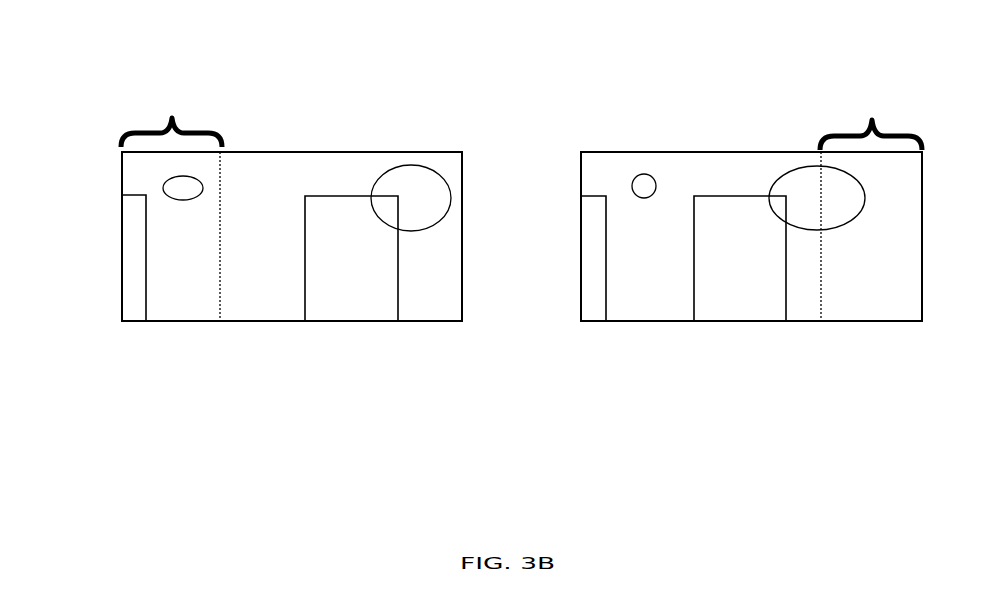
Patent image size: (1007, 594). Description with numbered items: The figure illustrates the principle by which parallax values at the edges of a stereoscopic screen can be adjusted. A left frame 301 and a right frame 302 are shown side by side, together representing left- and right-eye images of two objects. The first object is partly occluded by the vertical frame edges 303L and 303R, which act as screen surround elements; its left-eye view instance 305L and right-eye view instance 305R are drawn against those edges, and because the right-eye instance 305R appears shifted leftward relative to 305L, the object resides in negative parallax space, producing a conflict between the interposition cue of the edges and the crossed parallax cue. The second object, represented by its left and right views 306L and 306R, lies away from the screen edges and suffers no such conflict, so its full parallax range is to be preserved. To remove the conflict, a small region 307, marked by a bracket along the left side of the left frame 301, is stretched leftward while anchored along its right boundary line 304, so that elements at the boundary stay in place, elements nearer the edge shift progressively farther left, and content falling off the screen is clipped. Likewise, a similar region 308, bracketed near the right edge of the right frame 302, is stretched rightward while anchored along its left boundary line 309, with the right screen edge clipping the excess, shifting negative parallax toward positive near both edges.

The left frame 301 is at (285, 142).
The right frame 302 is at (770, 140).
The left frame edge 303L is at (116, 253).
The right frame edge 303R is at (574, 247).
The right edge of stretch region 304 is at (223, 192).
The left eye view instance of object 305 305L is at (133, 286).
The right eye view instance of object 305 305R is at (593, 293).
The left view of object 306 306L is at (352, 293).
The right view of object 306 306R is at (750, 268).
The stretch region 307 is at (171, 120).
The right stretch region 308 is at (871, 126).
The left edge of region 308 309 is at (828, 250).